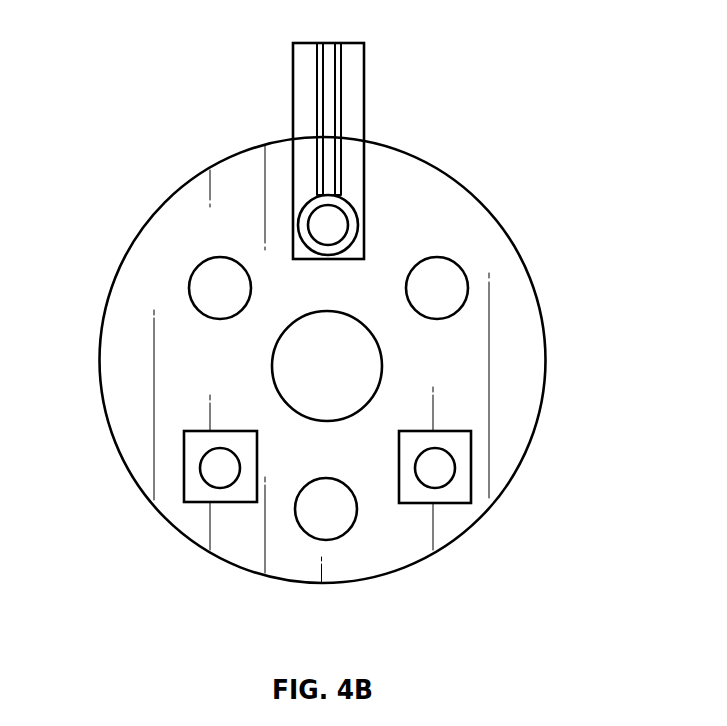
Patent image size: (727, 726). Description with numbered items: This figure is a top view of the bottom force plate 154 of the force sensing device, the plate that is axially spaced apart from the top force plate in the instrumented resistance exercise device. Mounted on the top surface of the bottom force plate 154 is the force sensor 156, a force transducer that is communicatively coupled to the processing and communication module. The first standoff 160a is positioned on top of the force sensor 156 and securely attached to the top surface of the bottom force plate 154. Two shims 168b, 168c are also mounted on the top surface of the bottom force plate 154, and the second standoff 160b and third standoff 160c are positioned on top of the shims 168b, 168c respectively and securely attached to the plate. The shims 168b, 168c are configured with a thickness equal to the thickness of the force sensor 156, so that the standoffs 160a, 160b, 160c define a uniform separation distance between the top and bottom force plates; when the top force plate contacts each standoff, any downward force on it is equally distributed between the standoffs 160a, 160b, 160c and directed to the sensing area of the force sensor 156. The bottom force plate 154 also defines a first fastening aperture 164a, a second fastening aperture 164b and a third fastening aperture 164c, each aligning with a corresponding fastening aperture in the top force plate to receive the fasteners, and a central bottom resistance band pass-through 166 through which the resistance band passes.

The bottom force plate 154 is at (232, 173).
The force sensor 156 is at (353, 112).
The first standoff 160a is at (363, 228).
The second standoff 160b is at (471, 467).
The third standoff 160c is at (185, 467).
The first fastening aperture 164a is at (327, 510).
The second fastening aperture 164b is at (215, 289).
The third fastening aperture 164c is at (437, 288).
The bottom resistance band pass-through 166 is at (327, 365).
The shim 168b is at (456, 485).
The shim 168c is at (200, 490).